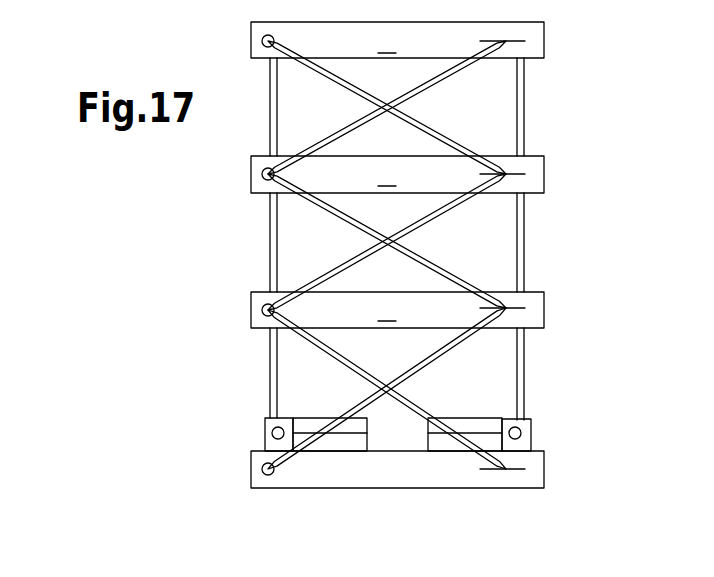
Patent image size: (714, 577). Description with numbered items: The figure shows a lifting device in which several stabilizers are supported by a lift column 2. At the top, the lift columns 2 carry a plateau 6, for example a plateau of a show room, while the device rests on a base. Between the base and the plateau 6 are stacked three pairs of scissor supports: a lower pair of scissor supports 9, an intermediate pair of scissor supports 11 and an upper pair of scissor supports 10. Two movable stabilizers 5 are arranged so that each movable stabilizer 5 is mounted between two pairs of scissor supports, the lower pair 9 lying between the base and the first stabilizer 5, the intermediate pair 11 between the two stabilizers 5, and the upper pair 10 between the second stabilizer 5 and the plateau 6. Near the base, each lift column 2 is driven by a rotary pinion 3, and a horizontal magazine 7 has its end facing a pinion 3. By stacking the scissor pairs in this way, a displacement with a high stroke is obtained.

The lift column 2 is at (270, 262).
The rotary pinion 3 is at (274, 433).
The movable stabilizer 5 is at (397, 242).
The plateau 6 is at (397, 40).
The magazine 7 is at (437, 442).
The lower pair of scissor supports 9 is at (458, 345).
The upper pair of scissor supports 10 is at (461, 70).
The intermediate pair of scissor supports 11 is at (456, 208).